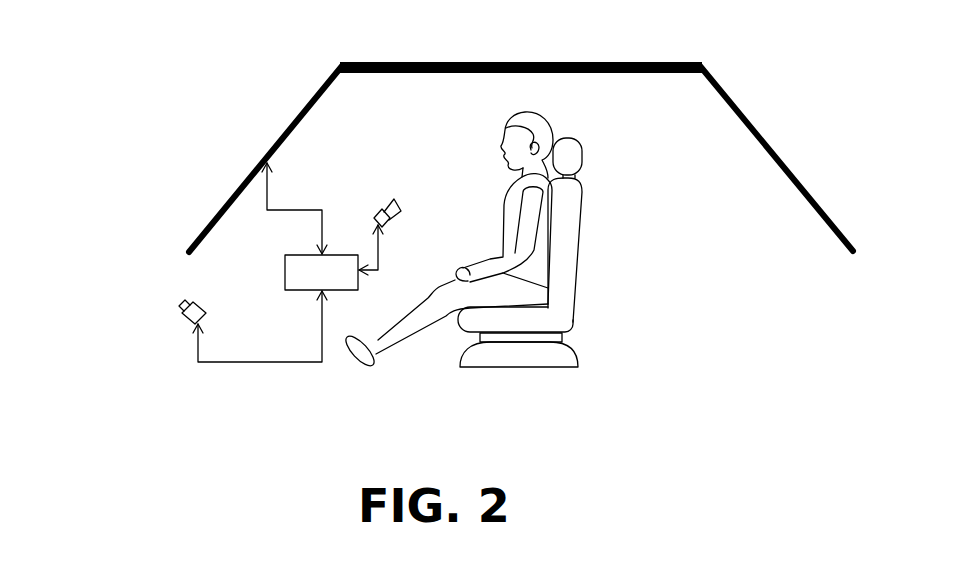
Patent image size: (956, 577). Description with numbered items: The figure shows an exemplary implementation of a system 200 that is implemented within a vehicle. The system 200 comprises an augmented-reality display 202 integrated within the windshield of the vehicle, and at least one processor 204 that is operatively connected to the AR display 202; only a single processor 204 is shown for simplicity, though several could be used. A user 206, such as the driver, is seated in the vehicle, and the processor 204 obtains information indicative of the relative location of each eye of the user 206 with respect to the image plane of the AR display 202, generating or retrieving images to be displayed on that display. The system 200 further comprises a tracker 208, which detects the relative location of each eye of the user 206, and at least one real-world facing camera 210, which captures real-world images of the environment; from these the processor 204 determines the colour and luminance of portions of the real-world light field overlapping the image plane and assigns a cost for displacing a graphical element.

The system 200 is at (195, 165).
The augmented-reality (AR) display 202 is at (290, 131).
The processor 204 is at (343, 286).
The user 206 is at (539, 114).
The tracker 208 is at (389, 207).
The real-world facing camera 210 is at (180, 312).